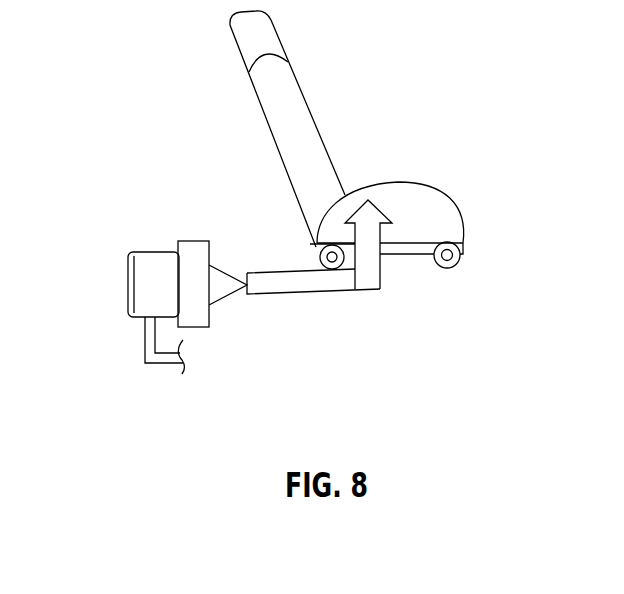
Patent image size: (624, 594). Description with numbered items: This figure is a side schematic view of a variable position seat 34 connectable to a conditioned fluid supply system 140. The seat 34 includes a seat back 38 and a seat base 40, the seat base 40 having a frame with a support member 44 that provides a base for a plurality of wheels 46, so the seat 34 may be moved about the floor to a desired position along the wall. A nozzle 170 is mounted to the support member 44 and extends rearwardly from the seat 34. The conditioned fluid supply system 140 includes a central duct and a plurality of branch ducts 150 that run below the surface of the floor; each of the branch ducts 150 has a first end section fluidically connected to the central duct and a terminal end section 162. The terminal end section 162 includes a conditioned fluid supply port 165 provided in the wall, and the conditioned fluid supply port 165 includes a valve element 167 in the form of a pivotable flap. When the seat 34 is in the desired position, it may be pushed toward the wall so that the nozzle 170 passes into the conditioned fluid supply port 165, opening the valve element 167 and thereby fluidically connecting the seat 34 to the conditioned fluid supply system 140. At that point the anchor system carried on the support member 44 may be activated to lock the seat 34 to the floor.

The seat 34 is at (354, 105).
The seat back 38 is at (270, 97).
The seat base 40 is at (450, 212).
The support member 44 is at (425, 258).
The wheels 46 is at (343, 266).
The conditioned fluid supply system 140 is at (100, 266).
The branch ducts 150 is at (160, 373).
The terminal end section 162 is at (148, 323).
The conditioned fluid supply port 165 is at (147, 260).
The valve element 167 is at (228, 270).
The nozzle 170 is at (272, 304).